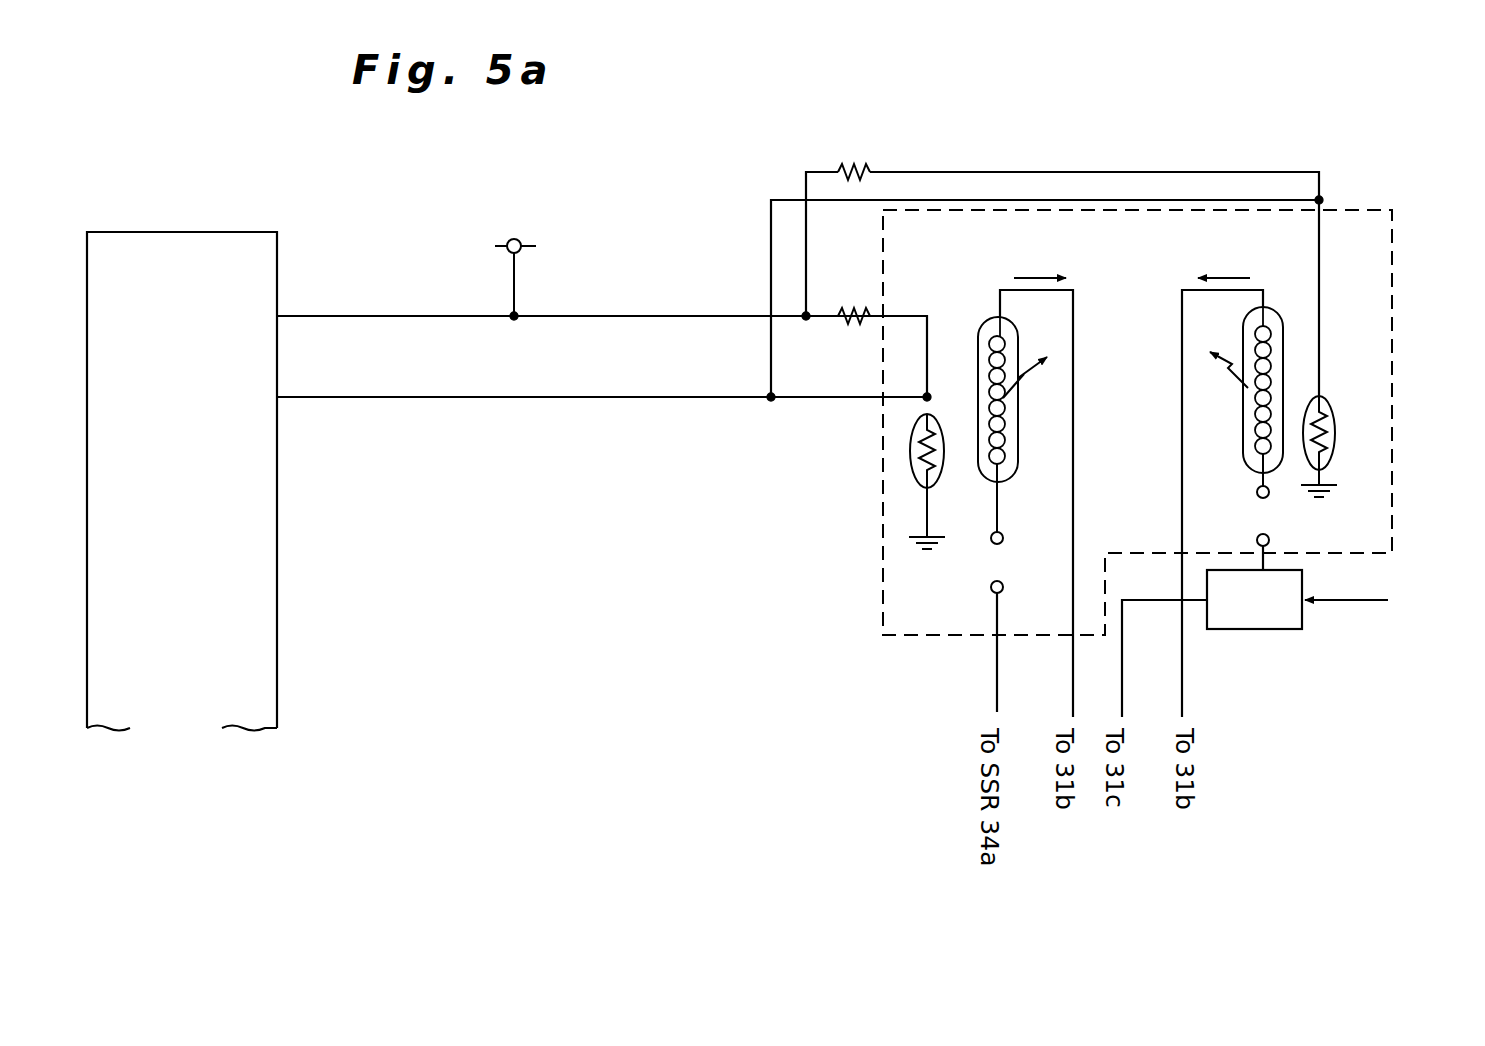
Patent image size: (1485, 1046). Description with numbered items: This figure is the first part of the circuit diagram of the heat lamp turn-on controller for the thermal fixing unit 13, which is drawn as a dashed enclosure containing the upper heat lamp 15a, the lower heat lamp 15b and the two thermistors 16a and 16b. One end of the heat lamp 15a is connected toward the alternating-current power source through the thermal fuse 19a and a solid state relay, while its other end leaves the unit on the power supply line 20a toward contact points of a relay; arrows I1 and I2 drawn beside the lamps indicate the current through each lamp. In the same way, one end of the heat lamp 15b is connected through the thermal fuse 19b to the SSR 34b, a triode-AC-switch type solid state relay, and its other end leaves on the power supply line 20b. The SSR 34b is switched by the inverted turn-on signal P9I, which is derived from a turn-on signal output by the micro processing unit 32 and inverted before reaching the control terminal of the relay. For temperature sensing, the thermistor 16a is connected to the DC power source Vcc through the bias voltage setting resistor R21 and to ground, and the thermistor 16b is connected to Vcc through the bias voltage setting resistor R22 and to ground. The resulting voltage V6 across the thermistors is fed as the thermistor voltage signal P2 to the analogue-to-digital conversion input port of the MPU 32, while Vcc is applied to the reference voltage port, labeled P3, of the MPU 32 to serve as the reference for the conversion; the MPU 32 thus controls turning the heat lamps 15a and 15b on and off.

The micro processing unit (MPU) 32 is at (176, 232).
The reference voltage port P3 is at (279, 320).
The thermistor voltage signal P2 is at (279, 402).
The DC power source Vcc is at (492, 277).
The voltage across the thermistors V6 is at (768, 394).
The bias voltage setting resistor R22 is at (1060, 228).
The bias voltage setting resistor R21 is at (846, 304).
The thermal fixing unit 13 is at (1394, 322).
The heat lamp 15a is at (978, 345).
The heat lamp 15b is at (1283, 322).
The thermistor 16a is at (941, 428).
The thermistor 16b is at (1328, 409).
The current I1 is at (1040, 262).
The current I2 is at (1224, 262).
The thermal fuse 19a is at (994, 563).
The thermal fuse 19b is at (1265, 516).
The power supply line 20a is at (1073, 703).
The power supply line 20b is at (1183, 704).
The solid state relay (SSR) 34b is at (1303, 625).
The inverted turn-on signal for the lower heat lamp P9I is at (1370, 602).